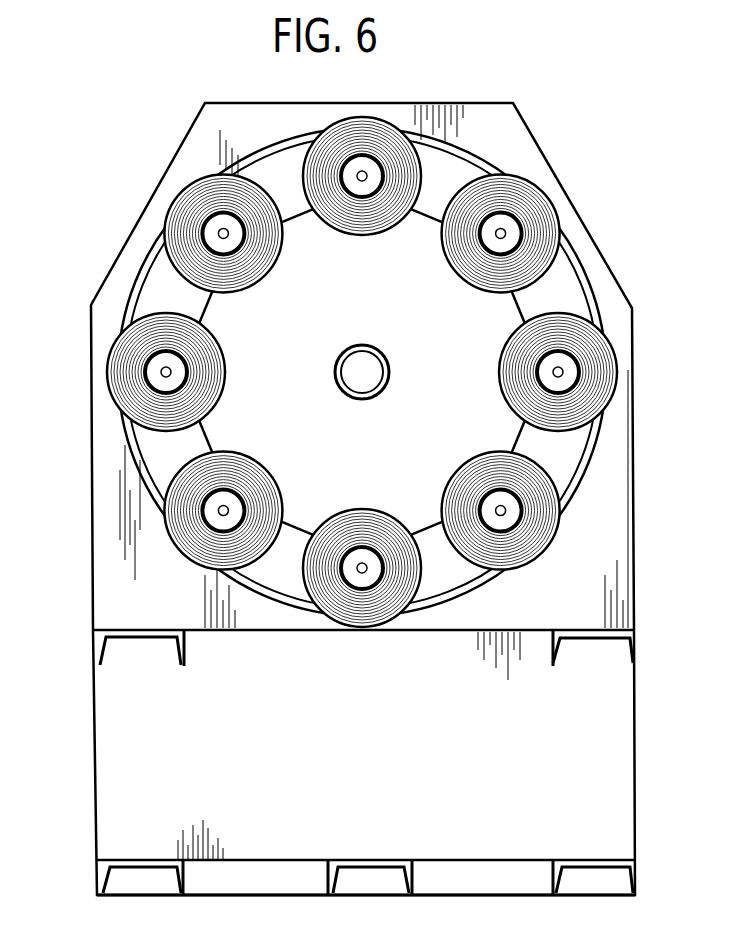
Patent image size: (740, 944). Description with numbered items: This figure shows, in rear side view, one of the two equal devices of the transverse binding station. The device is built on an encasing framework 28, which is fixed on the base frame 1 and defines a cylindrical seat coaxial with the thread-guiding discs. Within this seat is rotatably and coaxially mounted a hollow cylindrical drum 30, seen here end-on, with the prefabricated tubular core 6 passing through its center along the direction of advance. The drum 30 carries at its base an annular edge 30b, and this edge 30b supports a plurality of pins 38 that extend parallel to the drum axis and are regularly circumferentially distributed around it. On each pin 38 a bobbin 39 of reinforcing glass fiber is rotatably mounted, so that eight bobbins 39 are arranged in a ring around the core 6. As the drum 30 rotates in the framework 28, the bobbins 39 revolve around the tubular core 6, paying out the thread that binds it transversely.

The base frame 1 is at (97, 768).
The prefabricated tubular core 6 is at (386, 366).
The encasing framework 28 is at (128, 528).
The hollow cylindrical drum 30 is at (473, 147).
The annular edge 30b is at (425, 202).
The pin 38 is at (222, 233).
The bobbin 39 is at (187, 203).